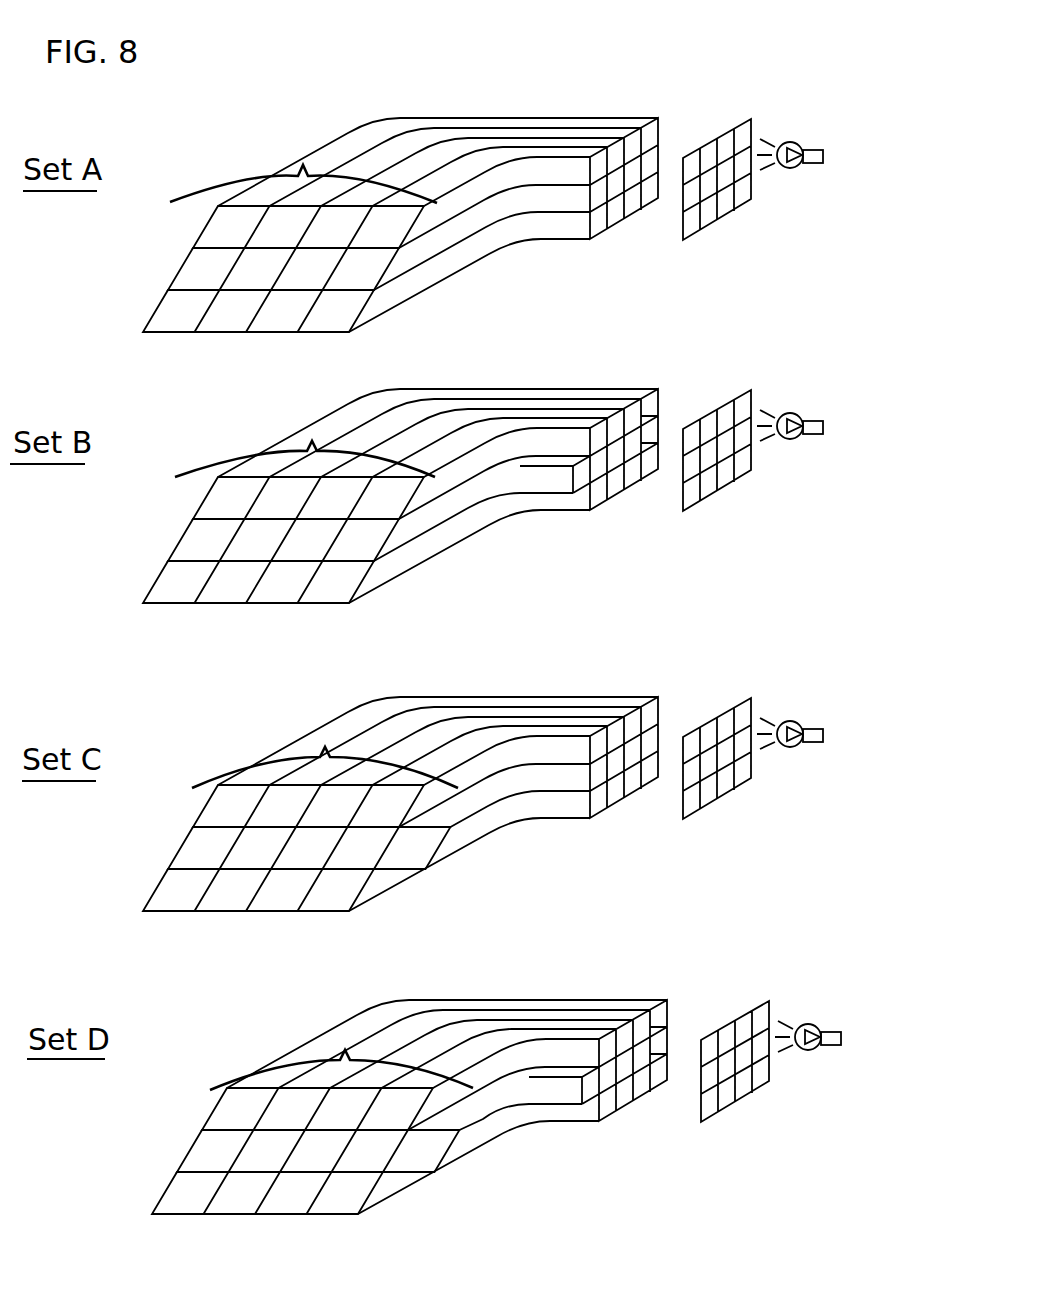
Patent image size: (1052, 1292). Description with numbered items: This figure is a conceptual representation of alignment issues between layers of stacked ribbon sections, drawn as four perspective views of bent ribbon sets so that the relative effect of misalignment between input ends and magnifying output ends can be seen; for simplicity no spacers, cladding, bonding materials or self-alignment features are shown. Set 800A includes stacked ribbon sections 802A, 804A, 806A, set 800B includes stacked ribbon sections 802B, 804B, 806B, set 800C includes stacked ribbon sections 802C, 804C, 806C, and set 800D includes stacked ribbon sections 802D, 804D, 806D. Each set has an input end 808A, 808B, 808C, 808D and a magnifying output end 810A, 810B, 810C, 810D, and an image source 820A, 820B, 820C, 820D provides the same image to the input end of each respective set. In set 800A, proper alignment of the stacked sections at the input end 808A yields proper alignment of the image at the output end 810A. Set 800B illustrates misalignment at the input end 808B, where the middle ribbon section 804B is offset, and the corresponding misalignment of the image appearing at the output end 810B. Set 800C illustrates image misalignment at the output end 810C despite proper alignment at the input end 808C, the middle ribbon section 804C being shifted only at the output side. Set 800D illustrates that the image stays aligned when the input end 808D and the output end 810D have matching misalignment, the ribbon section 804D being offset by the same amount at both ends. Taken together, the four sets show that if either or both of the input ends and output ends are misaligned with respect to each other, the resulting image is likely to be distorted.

The set of ribbon sections 800A is at (320, 125).
The ribbon section 802A is at (192, 217).
The ribbon section 804A is at (170, 261).
The ribbon section 806A is at (143, 303).
The input end 808A is at (663, 110).
The magnifying output end 810A is at (303, 165).
The image source 820A is at (693, 118).
The set of ribbon sections 800B is at (375, 496).
The ribbon section 802B is at (278, 484).
The ribbon section 804B is at (254, 525).
The ribbon section 806B is at (229, 571).
The input end 808B is at (593, 429).
The magnifying output end 810B is at (260, 499).
The image source 820B is at (756, 417).
The set of ribbon sections 800C is at (385, 804).
The ribbon section 802C is at (278, 793).
The ribbon section 804C is at (340, 873).
The ribbon section 806C is at (229, 880).
The input end 808C is at (593, 737).
The magnifying output end 810C is at (298, 810).
The image source 820C is at (756, 725).
The set of ribbon sections 800D is at (400, 1106).
The ribbon section 802D is at (288, 1096).
The ribbon section 804D is at (348, 1175).
The ribbon section 806D is at (239, 1182).
The input end 808D is at (600, 1039).
The magnifying output end 810D is at (307, 1114).
The image source 820D is at (774, 1028).